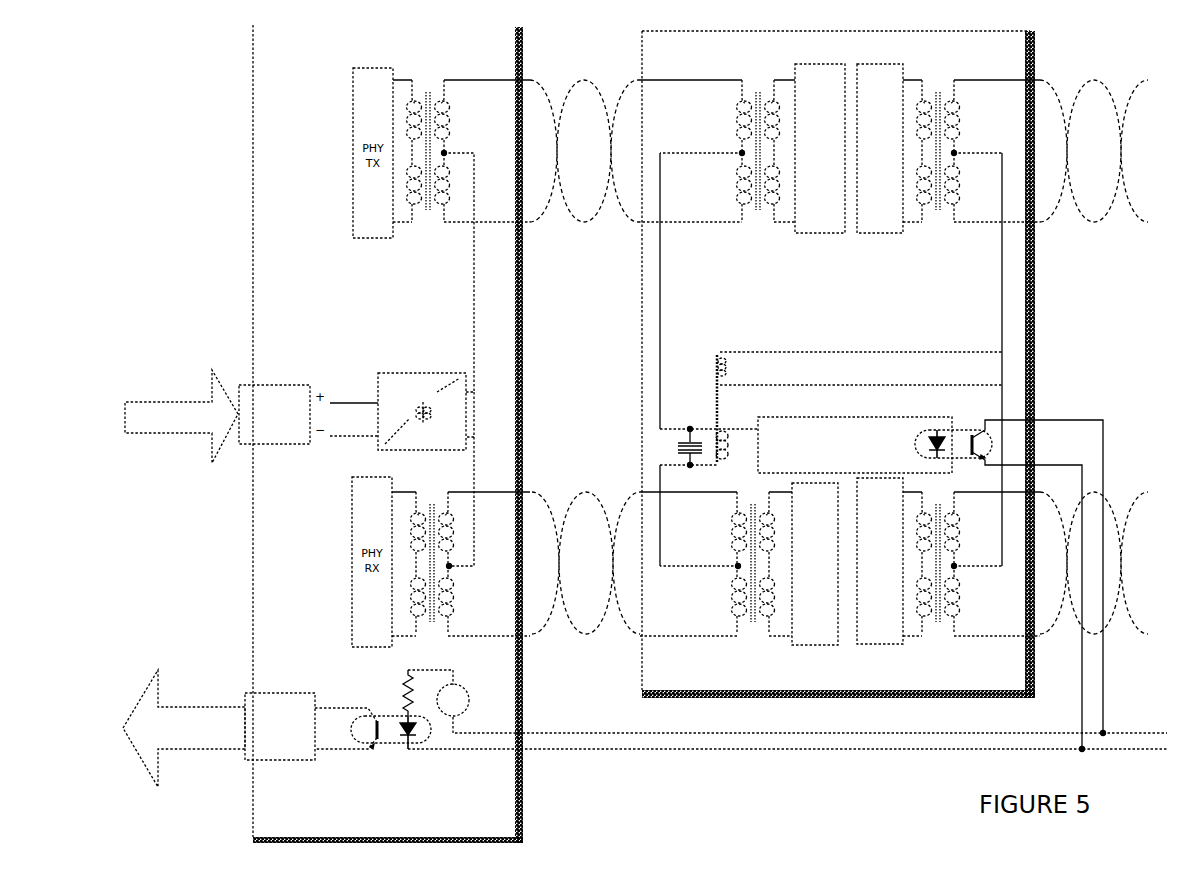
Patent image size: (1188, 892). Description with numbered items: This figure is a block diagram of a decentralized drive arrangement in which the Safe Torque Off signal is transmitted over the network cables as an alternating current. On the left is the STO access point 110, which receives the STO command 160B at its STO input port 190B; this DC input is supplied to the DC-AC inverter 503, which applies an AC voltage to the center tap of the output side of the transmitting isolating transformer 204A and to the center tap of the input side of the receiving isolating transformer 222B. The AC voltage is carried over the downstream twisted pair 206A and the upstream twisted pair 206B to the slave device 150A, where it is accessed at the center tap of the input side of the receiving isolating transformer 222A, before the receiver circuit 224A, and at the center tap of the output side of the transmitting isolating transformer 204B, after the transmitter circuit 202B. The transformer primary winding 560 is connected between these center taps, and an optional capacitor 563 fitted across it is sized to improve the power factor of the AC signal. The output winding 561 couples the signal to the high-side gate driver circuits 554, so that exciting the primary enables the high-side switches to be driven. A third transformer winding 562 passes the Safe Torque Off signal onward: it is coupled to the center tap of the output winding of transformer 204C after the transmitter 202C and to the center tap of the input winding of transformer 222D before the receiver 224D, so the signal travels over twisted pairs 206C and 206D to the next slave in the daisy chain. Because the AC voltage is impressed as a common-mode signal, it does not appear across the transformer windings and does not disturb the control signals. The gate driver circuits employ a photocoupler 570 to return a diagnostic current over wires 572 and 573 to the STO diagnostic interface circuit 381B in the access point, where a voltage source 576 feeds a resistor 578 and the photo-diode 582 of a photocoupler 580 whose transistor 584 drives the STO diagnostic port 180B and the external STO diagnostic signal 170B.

The STO access point 110 is at (447, 43).
The slave device 150A is at (888, 47).
The STO command 160B is at (167, 433).
The STO input port 190B is at (261, 436).
The STO diagnostic 170B is at (171, 742).
The STO diagnostic port 180B is at (266, 753).
The STO diagnostic circuit 381B is at (741, 736).
The transmitting isolating transformer 204A is at (428, 230).
The transmitting isolating transformer 204B is at (754, 640).
The transformer 204C is at (938, 230).
The receiving isolating transformer 222A is at (758, 230).
The receiving isolating transformer 222B is at (438, 496).
The transformer 222D is at (936, 640).
The twisted pair of conductors 206A is at (580, 236).
The twisted pair of conductors 206B is at (592, 490).
The twisted pair 206C is at (1089, 236).
The twisted pair 206D is at (1124, 648).
The receiver circuit 224A is at (806, 166).
The receiver 224D is at (866, 580).
The transmitter circuit 202B is at (801, 580).
The transmitter 202C is at (866, 166).
The DC-AC inverter 503 is at (420, 370).
The high-side gate driver circuits 554 is at (847, 466).
The transformer primary winding 560 is at (708, 429).
The transformer output winding 561 is at (726, 449).
The third transformer winding 562 is at (717, 356).
The capacitor 563 is at (677, 445).
The photocoupler 570 is at (954, 427).
The wire 572 is at (631, 732).
The wire 573 is at (636, 752).
The 24V supply 576 is at (468, 690).
The resistor 578 is at (401, 701).
The optocoupler 580 is at (394, 749).
The light emitting diode 582 is at (395, 746).
The phototransistor 584 is at (373, 735).